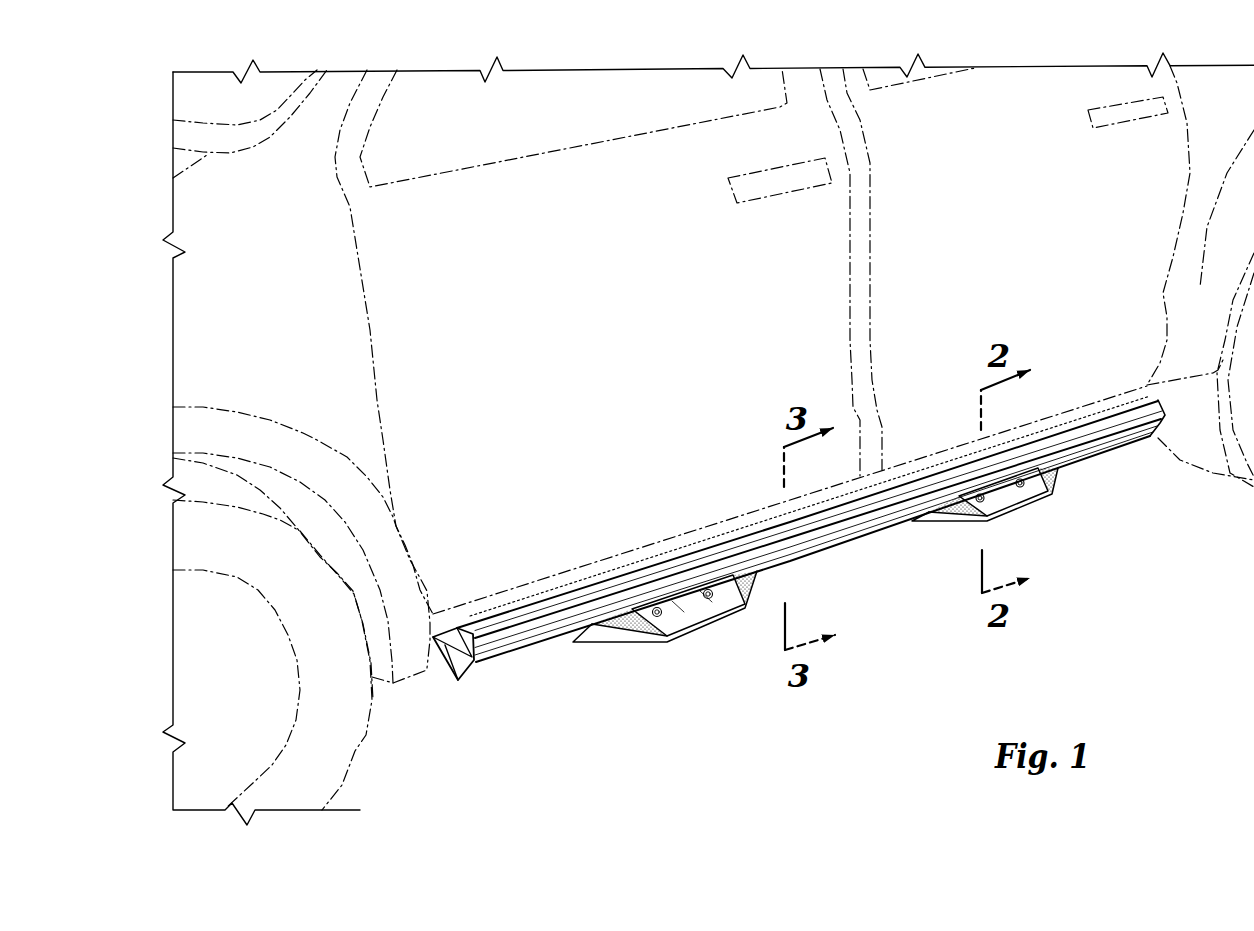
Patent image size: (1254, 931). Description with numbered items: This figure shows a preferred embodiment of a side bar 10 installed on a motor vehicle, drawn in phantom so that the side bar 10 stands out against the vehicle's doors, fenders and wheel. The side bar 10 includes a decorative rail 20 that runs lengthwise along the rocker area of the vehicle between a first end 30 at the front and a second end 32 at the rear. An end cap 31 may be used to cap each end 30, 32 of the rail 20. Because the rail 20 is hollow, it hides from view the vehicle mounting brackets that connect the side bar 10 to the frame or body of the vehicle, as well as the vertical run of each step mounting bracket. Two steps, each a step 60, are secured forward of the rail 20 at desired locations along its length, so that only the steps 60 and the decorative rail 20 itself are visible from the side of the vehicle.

The side bar 10 is at (1087, 533).
The decorative rail 20 is at (822, 531).
The first end 30 is at (460, 687).
The end cap 31 is at (437, 673).
The second end 32 is at (1163, 418).
The step 60 is at (647, 648).